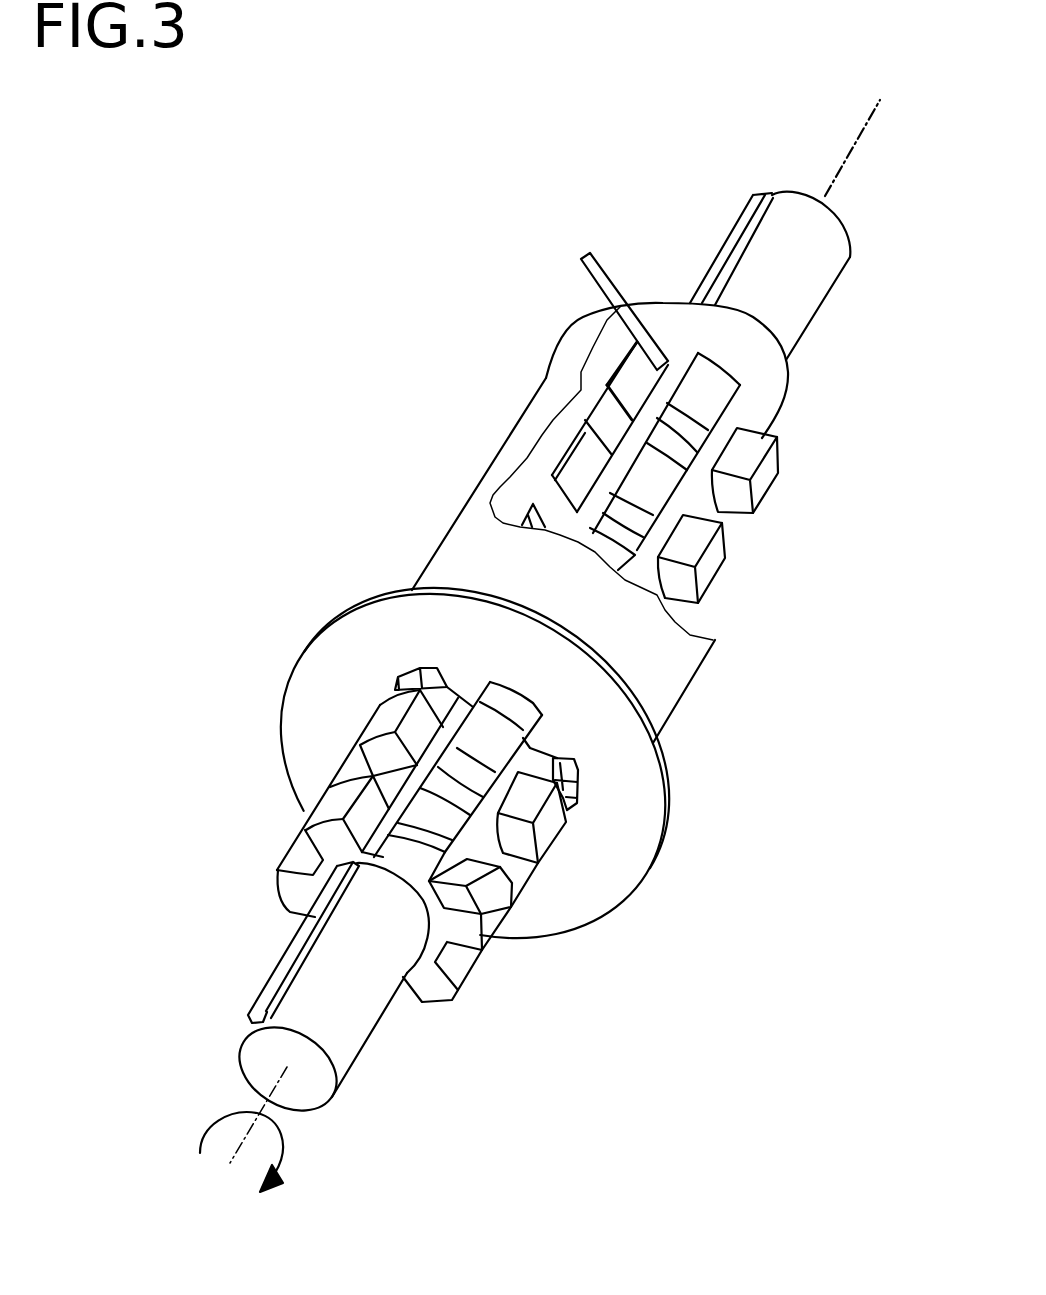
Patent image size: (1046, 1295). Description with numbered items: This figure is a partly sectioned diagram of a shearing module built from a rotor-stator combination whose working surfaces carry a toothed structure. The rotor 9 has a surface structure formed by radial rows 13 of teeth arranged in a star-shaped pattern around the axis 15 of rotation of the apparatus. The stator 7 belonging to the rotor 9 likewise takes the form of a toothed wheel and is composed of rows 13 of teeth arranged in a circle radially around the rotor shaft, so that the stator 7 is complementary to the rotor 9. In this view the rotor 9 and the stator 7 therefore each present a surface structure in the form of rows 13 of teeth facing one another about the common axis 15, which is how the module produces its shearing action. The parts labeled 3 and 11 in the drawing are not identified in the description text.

The rotor shaft 3 is at (710, 708).
The stator 7 is at (587, 397).
The rotor 9 is at (697, 505).
The key groove 11 is at (593, 262).
The rows of teeth 13 is at (700, 385).
The axis of rotation 15 is at (850, 160).